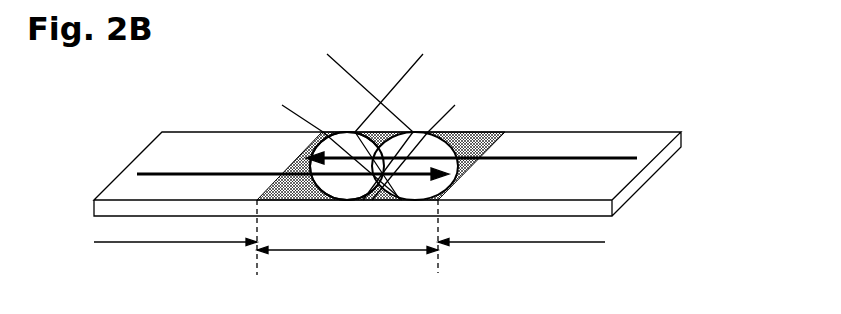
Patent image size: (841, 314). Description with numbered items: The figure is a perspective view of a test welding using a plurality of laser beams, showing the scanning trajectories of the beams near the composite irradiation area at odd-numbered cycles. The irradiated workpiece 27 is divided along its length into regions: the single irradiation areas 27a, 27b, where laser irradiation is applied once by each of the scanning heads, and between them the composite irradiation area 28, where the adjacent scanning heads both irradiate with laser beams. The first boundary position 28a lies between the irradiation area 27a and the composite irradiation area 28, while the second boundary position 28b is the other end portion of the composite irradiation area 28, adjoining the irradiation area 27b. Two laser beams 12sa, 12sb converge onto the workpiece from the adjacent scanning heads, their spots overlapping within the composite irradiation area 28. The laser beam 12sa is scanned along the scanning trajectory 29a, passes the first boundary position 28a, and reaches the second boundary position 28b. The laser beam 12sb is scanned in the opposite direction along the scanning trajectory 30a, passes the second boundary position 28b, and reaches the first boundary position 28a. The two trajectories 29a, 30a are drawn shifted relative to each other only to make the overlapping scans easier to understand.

The laser beam 12sa is at (308, 78).
The laser beam 12sb is at (440, 78).
The irradiation area 27 is at (629, 120).
The single irradiation area 27a is at (192, 243).
The single irradiation area 27b is at (508, 248).
The composite irradiation area 28 is at (337, 258).
The first boundary position 28a is at (259, 252).
The second boundary position 28b is at (434, 252).
The scanning trajectory 29a is at (146, 162).
The scanning trajectory 30a is at (638, 156).